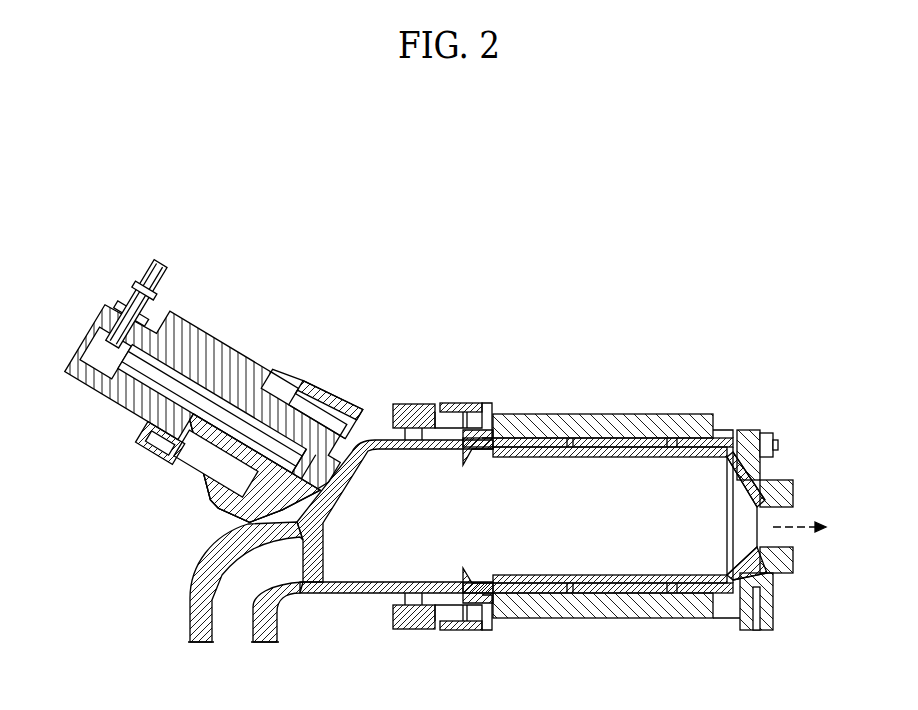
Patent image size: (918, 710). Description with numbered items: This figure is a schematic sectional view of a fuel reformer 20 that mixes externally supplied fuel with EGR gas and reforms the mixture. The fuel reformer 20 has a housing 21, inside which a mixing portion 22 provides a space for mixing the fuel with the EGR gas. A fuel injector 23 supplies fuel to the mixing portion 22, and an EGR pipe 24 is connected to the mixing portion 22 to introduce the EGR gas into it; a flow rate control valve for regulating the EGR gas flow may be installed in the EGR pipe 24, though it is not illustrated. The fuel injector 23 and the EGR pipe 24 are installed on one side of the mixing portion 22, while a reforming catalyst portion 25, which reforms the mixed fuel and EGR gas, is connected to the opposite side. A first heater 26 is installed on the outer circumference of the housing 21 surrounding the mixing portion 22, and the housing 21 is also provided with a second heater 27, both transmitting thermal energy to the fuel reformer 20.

The fuel reformer 20 is at (466, 222).
The housing 21 is at (362, 403).
The mixing portion 22 is at (370, 546).
The fuel injector 23 is at (195, 441).
The EGR pipe 24 is at (193, 588).
The reforming catalyst portion 25 is at (572, 553).
The first heater 26 is at (418, 406).
The second heater 27 is at (593, 414).